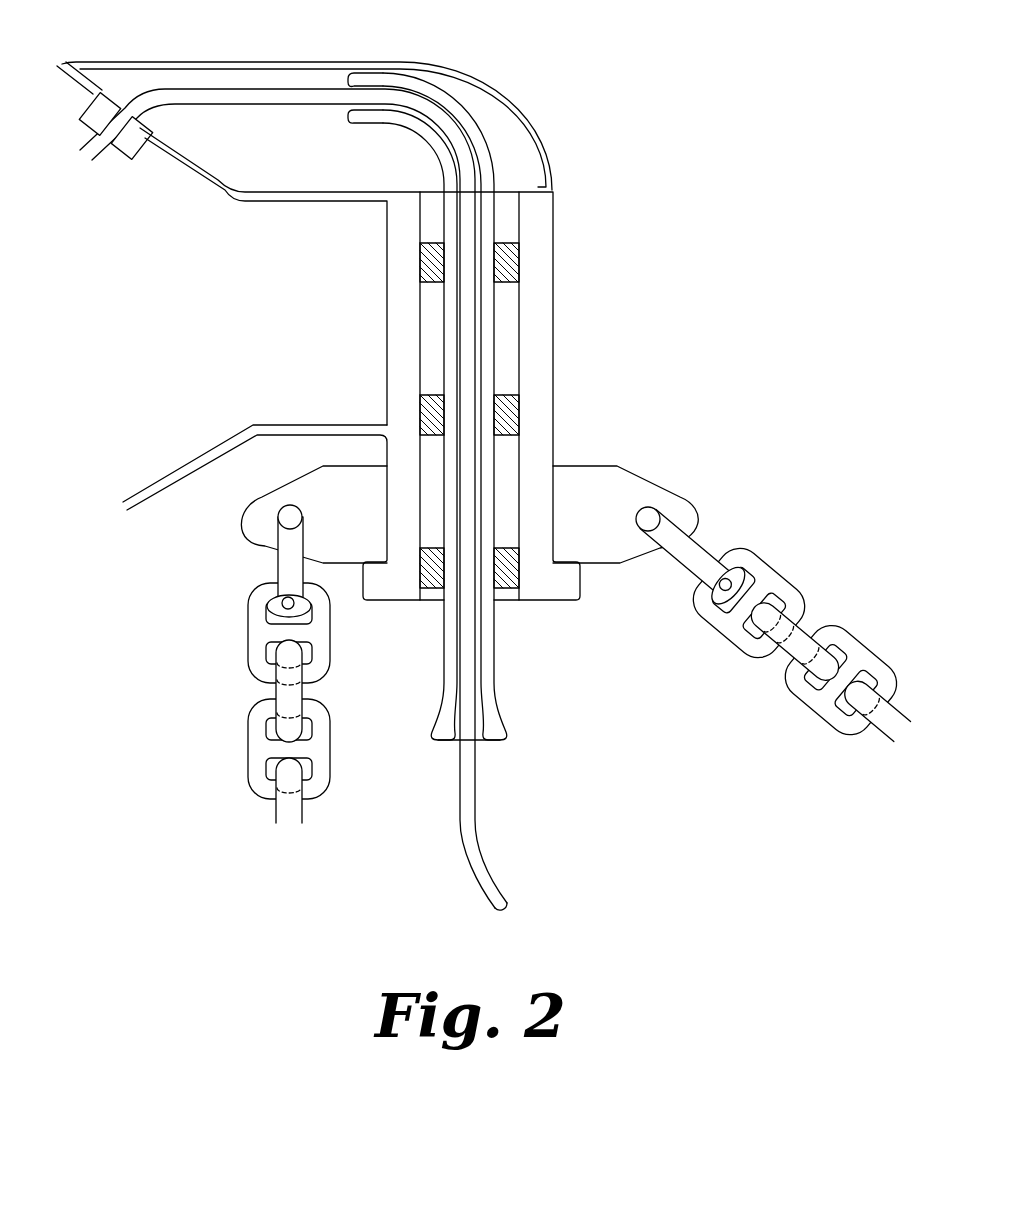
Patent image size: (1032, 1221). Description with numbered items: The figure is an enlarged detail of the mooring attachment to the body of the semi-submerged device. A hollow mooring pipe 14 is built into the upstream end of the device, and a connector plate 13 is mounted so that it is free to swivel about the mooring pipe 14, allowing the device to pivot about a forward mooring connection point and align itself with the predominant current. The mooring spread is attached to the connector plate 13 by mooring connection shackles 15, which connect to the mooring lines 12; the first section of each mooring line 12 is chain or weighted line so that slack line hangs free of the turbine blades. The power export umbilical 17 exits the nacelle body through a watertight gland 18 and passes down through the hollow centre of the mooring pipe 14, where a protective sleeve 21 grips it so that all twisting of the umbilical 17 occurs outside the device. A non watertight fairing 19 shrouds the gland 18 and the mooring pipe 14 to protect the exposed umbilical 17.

The mooring lines 12 is at (255, 753).
The connector plate 13 is at (640, 480).
The hollow mooring pipe 14 is at (553, 355).
The mooring connection shackles 15 is at (277, 563).
The power export umbilical 17 is at (218, 100).
The watertight gland 18 is at (130, 158).
The non watertight fairing 19 is at (515, 112).
The protective sleeve 21 is at (498, 713).